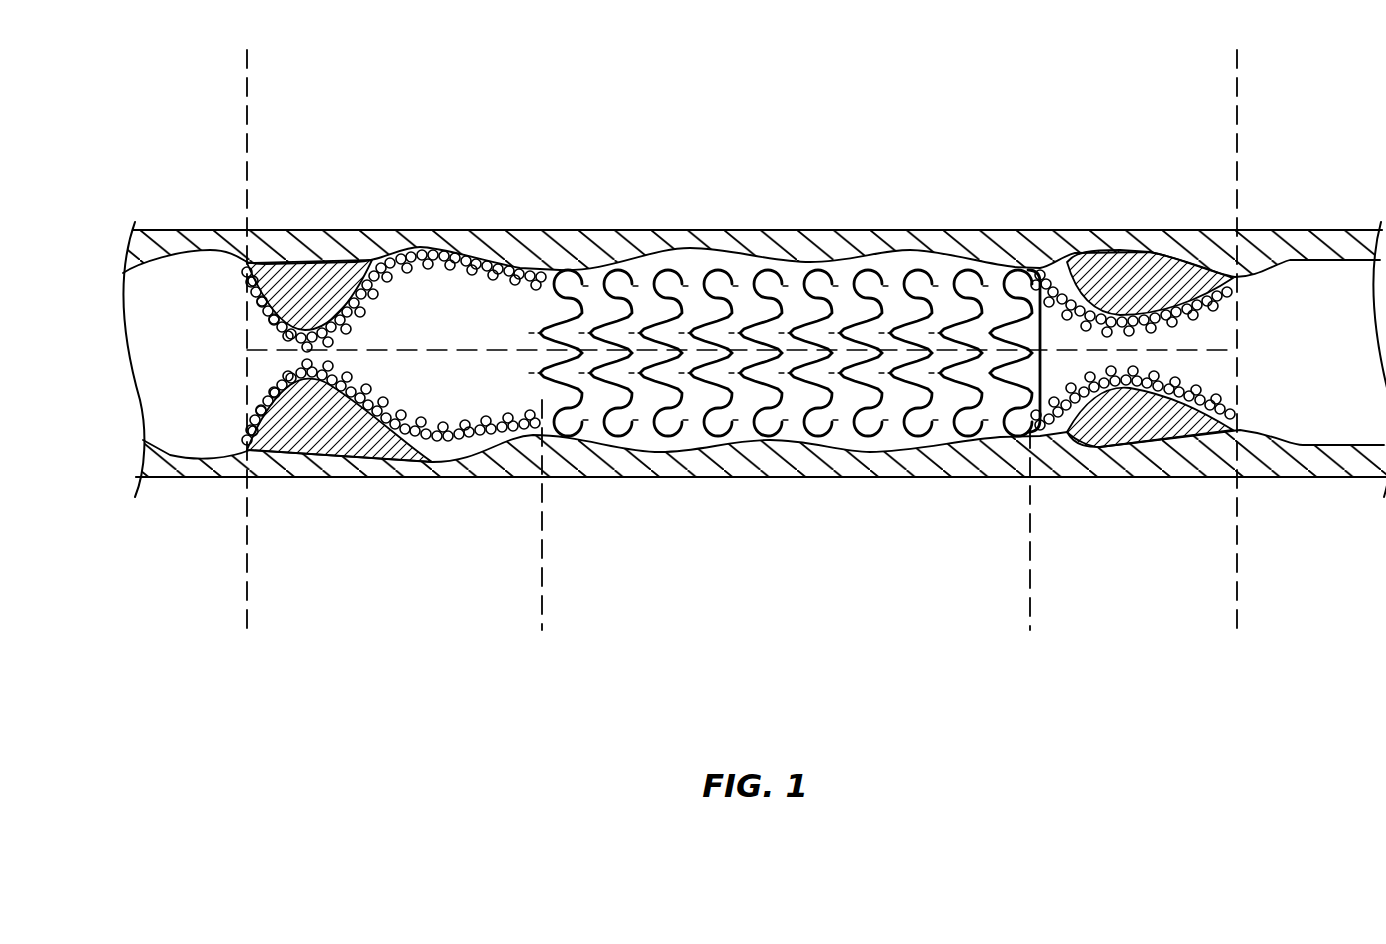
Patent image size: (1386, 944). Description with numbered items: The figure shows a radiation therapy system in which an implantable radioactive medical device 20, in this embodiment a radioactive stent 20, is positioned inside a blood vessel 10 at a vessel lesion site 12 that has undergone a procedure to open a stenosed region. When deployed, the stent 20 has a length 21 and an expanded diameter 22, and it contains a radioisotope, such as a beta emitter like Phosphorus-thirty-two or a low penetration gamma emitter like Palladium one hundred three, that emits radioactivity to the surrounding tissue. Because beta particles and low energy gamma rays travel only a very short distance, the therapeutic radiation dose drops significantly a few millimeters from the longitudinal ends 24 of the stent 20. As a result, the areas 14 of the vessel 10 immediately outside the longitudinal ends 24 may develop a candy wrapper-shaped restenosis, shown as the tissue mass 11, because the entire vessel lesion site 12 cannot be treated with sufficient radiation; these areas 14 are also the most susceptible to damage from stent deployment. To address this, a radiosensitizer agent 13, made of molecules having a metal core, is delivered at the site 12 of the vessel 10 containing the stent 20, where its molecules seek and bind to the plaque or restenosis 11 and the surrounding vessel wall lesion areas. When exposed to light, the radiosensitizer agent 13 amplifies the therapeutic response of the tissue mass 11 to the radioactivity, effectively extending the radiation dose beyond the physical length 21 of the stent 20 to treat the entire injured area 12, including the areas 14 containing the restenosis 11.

The blood vessel 10 is at (1297, 230).
The tissue mass restenosis 11 is at (312, 278).
The vessel lesion site 12 is at (247, 97).
The radiosensitizer agent 13 is at (260, 382).
The areas of the vessel immediately outside the longitudinal ends of the stent 14 is at (247, 583).
The implantable radioactive medical device 20 is at (757, 272).
The length 21 is at (1030, 583).
The expanded diameter 22 is at (518, 433).
The longitudinal ends 24 is at (563, 230).